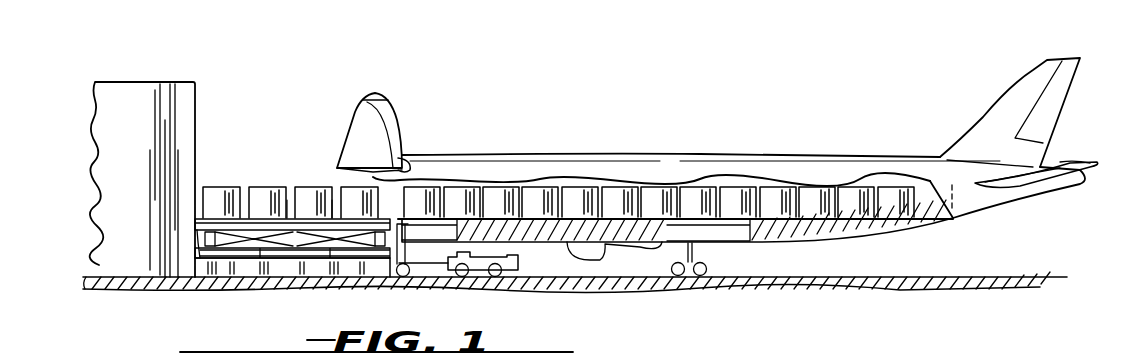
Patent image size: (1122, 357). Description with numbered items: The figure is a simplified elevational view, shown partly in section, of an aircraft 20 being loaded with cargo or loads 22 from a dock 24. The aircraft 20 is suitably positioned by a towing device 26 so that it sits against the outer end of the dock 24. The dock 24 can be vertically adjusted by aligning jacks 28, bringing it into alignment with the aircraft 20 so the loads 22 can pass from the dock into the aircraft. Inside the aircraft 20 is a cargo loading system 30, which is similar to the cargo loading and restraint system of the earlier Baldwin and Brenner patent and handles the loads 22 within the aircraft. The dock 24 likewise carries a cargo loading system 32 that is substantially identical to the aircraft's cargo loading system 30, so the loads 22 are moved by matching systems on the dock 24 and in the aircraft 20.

The aircraft 20 is at (722, 157).
The loads 22 is at (260, 187).
The dock 24 is at (293, 232).
The towing device 26 is at (530, 255).
The aligning jacks 28 is at (192, 238).
The cargo loading system 30 is at (606, 215).
The cargo loading system 32 is at (308, 187).